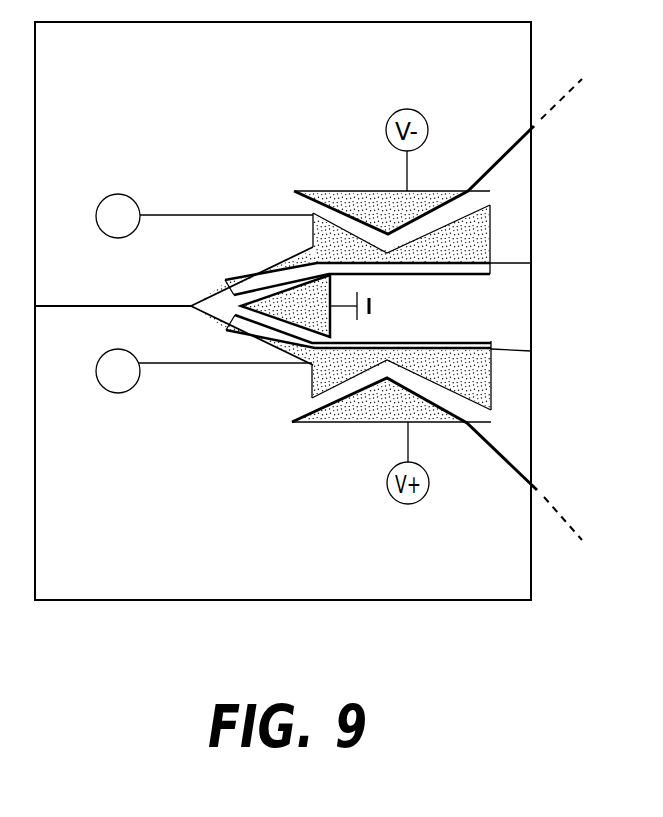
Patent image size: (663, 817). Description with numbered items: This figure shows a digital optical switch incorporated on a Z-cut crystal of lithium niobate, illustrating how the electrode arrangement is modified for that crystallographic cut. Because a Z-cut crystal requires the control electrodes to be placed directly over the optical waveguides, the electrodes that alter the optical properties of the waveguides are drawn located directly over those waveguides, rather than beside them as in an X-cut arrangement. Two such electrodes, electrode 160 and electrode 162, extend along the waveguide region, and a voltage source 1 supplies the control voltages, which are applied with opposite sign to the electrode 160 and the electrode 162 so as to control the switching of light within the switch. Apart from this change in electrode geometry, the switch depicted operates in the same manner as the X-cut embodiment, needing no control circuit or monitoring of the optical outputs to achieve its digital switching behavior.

The electrode 160 is at (252, 269).
The electrode 162 is at (252, 345).
The voltage source V1 1 is at (204, 293).